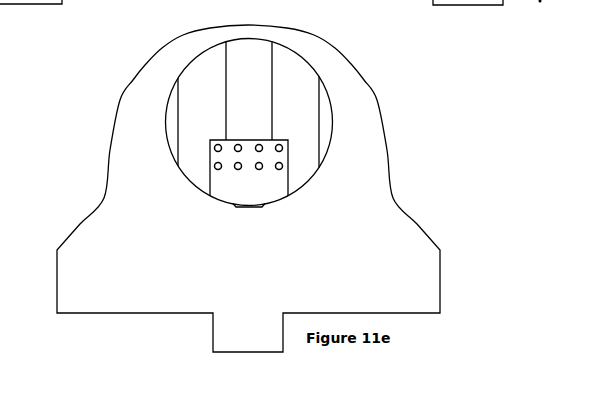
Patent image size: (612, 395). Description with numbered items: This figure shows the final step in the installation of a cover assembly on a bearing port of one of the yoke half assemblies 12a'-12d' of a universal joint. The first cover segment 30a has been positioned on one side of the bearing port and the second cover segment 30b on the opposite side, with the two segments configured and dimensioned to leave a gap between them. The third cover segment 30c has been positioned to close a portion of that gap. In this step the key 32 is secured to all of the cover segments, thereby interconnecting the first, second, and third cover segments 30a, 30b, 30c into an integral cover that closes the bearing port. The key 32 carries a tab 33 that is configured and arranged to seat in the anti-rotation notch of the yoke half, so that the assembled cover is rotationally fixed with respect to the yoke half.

The yoke half assemblies 12a'-12d' is at (248, 188).
The first cover segment 30a is at (192, 172).
The second cover segment 30b is at (306, 169).
The third cover segment 30c is at (245, 48).
The key 32 is at (270, 185).
The tab 33 is at (242, 207).